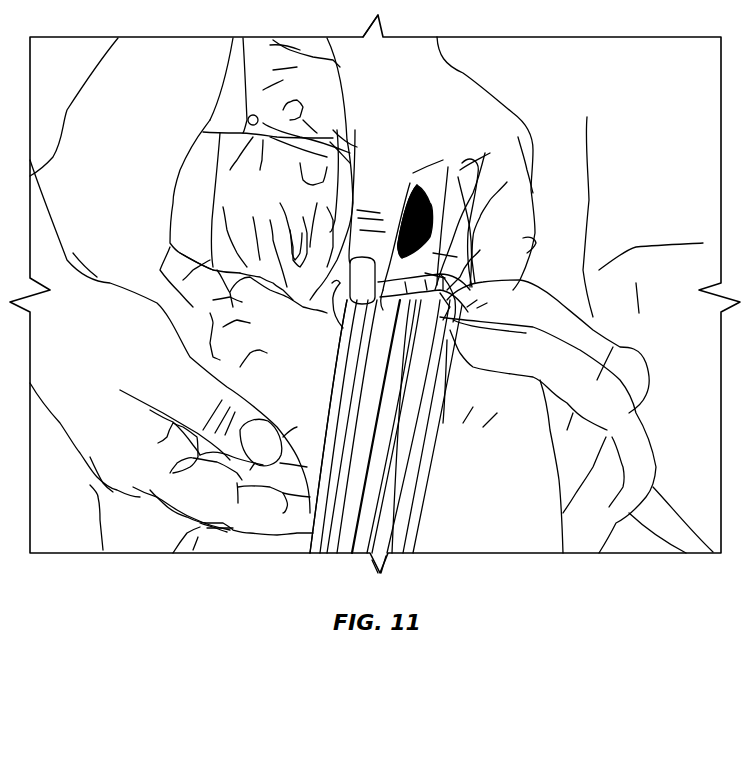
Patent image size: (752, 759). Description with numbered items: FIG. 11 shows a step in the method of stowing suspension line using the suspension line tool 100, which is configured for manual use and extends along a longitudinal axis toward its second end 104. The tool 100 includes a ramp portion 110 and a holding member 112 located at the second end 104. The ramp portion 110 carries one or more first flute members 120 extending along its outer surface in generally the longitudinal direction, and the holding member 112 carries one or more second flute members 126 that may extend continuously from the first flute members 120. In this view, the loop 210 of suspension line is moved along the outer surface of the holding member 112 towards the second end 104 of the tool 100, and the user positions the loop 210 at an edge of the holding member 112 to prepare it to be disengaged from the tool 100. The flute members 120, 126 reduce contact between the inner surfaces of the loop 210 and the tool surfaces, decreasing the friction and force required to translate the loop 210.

The suspension line tool 100 is at (509, 452).
The second end 104 is at (457, 331).
The ramp portion 110 is at (413, 541).
The holding member 112 is at (438, 462).
The first flute members 120 is at (360, 535).
The second flute members 126 is at (400, 387).
The loop 210 is at (457, 227).